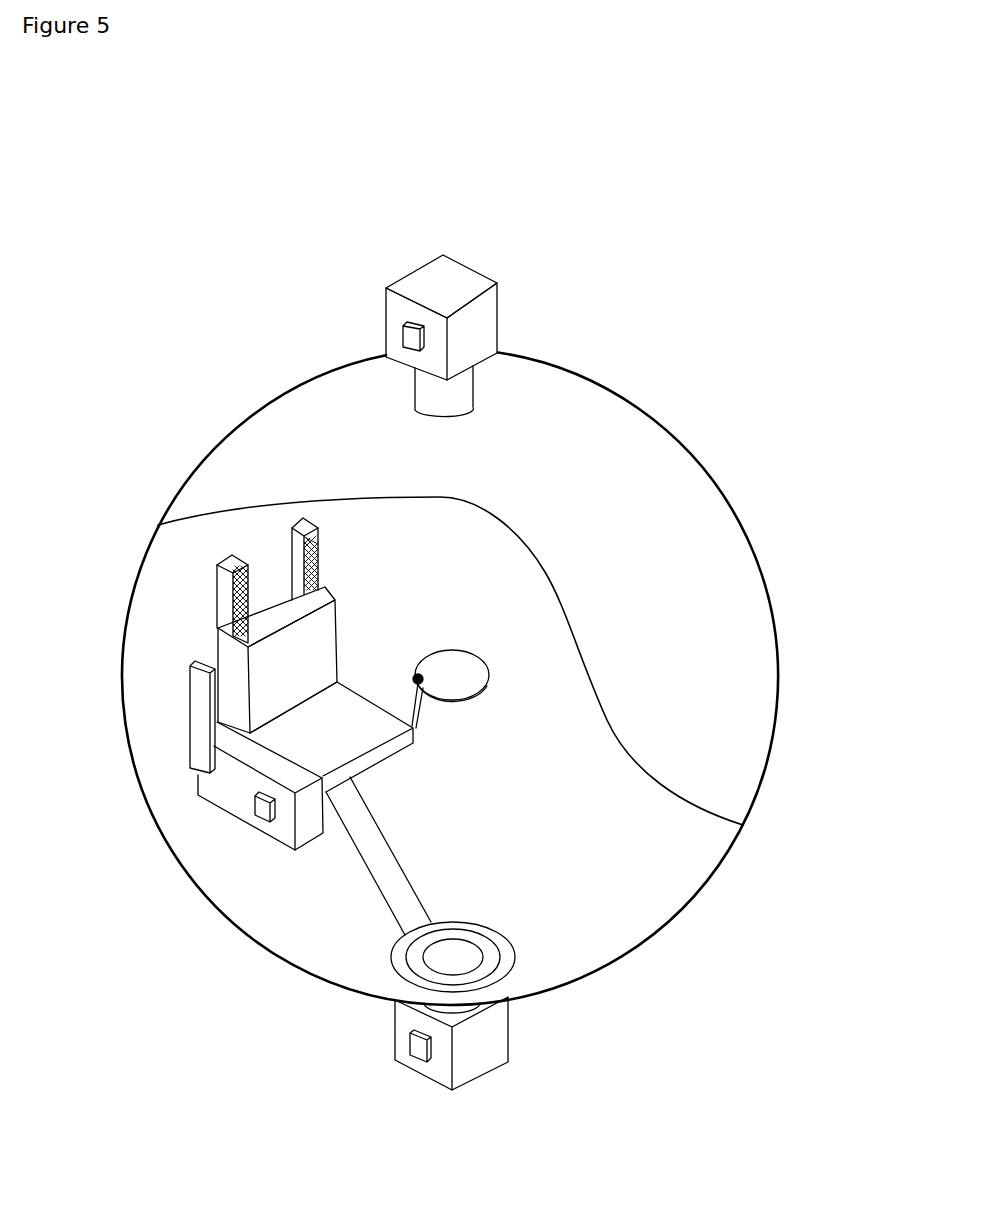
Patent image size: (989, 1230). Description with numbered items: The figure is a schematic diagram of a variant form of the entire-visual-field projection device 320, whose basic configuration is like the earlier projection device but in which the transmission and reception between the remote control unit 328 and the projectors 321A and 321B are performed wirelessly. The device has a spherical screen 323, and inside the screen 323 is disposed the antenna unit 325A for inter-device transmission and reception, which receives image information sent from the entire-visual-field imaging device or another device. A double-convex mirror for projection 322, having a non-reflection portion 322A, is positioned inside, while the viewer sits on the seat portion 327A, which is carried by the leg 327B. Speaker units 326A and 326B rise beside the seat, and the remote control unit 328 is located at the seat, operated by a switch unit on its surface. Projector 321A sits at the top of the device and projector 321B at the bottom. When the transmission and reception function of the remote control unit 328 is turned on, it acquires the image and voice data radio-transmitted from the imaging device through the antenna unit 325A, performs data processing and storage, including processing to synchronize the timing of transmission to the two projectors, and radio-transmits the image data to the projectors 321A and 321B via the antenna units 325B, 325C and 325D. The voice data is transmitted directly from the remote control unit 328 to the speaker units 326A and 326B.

The entire-visual-field projection device 320 is at (662, 324).
The projector 321A is at (499, 270).
The projector 321B is at (521, 1064).
The double-convex mirror for projection 322 is at (481, 669).
The non-reflection portion 322A is at (418, 676).
The screen 323 is at (710, 472).
The antenna unit 325A is at (197, 731).
The antenna unit 325B is at (265, 822).
The antenna unit 325C is at (405, 338).
The antenna unit 325D is at (420, 1052).
The speaker unit 326A is at (318, 550).
The speaker unit 326B is at (232, 607).
The seat portion 327A is at (335, 621).
The leg 327B is at (395, 873).
The remote control unit 328 is at (240, 791).